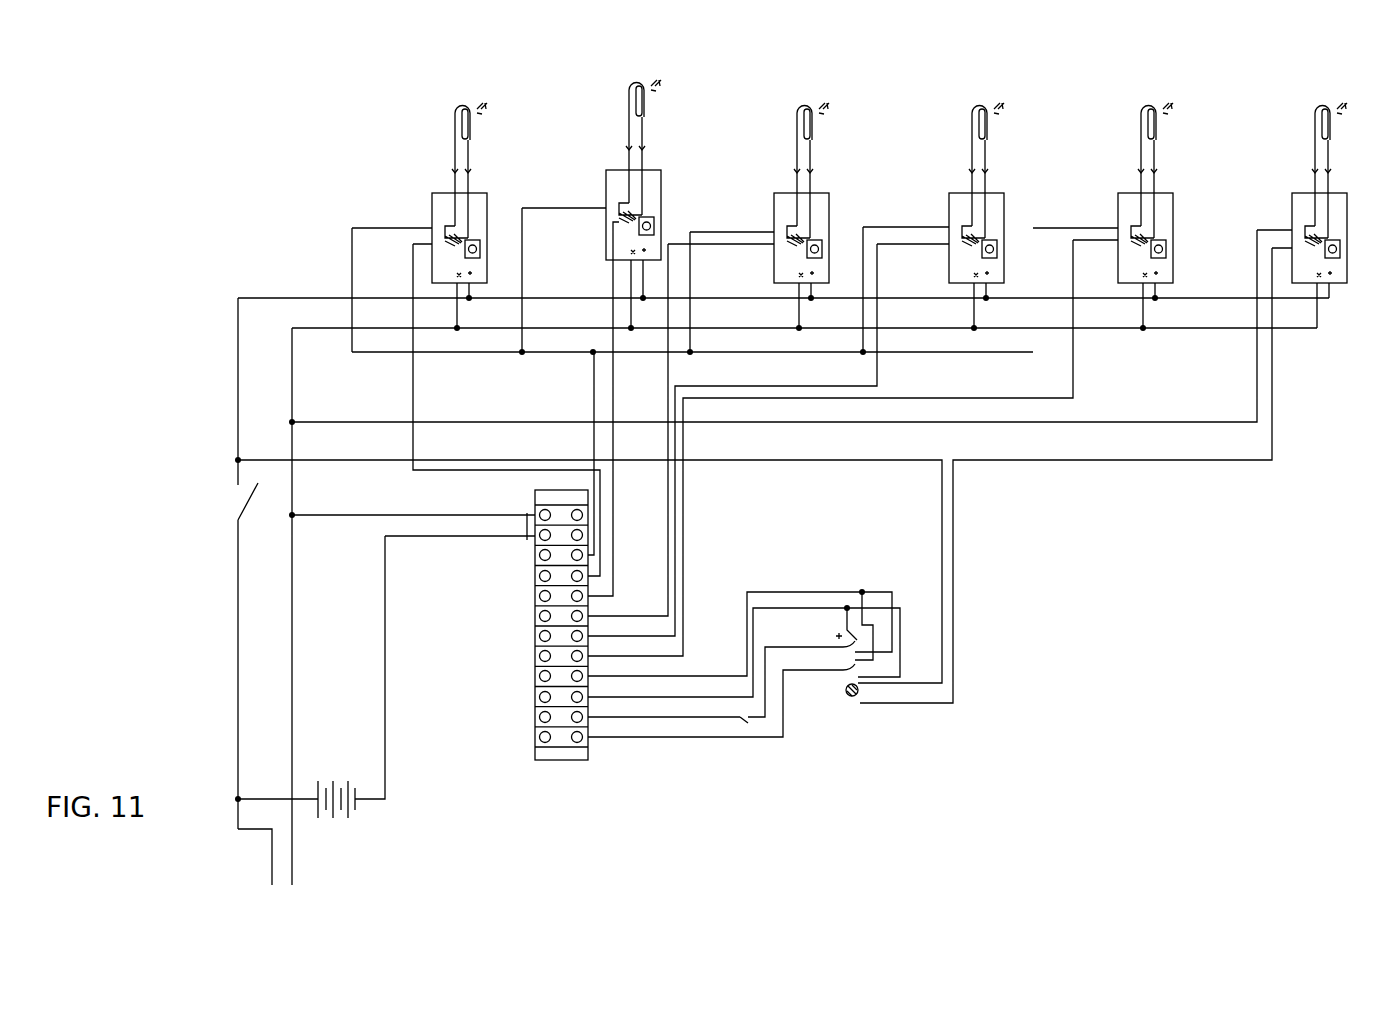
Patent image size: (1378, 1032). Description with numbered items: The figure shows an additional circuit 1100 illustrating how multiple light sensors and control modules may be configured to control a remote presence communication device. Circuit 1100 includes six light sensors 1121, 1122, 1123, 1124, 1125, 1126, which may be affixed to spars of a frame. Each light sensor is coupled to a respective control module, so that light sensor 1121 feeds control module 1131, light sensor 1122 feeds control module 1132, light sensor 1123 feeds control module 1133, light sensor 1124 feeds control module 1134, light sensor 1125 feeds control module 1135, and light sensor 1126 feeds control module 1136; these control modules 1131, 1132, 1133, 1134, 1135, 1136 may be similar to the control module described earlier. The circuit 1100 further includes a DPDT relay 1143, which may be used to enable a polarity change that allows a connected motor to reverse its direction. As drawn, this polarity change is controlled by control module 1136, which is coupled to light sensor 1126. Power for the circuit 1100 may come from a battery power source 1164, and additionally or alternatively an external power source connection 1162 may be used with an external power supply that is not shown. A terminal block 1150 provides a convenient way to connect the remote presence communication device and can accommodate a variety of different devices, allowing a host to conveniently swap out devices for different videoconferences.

The circuit 1100 is at (1284, 64).
The light sensor 1121 is at (442, 122).
The light sensor 1122 is at (617, 93).
The light sensor 1123 is at (784, 112).
The light sensor 1124 is at (959, 112).
The light sensor 1125 is at (1127, 118).
The light sensor 1126 is at (1304, 123).
The control module 1131 is at (451, 211).
The control module 1132 is at (625, 181).
The control module 1133 is at (792, 197).
The control module 1134 is at (967, 197).
The control module 1135 is at (1135, 205).
The control module 1136 is at (1312, 210).
The DPDT relay 1143 is at (852, 577).
The terminal block 1150 is at (567, 752).
The external power source connection 1162 is at (283, 891).
The battery power source 1164 is at (329, 829).